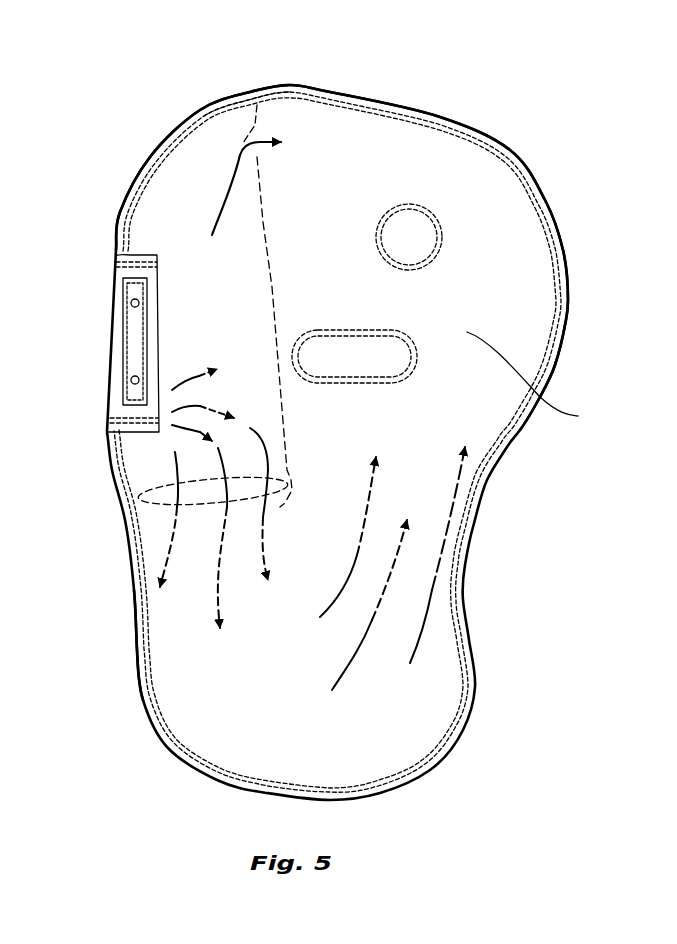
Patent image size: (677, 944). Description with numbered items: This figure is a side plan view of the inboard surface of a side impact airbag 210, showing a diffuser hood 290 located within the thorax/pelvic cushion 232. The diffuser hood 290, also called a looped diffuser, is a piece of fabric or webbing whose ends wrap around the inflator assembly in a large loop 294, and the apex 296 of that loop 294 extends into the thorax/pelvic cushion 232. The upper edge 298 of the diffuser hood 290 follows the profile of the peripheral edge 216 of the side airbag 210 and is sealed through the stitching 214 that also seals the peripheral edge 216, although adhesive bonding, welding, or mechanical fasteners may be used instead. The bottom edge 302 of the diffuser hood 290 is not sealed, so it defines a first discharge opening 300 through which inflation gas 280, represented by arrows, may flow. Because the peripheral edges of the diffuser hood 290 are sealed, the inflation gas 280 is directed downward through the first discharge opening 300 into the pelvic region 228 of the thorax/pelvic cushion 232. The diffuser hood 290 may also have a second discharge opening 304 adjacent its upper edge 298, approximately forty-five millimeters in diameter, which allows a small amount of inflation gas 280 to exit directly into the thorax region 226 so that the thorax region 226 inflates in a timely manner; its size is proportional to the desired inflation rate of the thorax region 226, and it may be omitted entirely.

The side impact airbag 210 is at (597, 202).
The peripheral edge 216 is at (509, 151).
The thorax/pelvic cushion 232 is at (527, 330).
The thorax region 226 is at (541, 381).
The pelvic region 228 is at (203, 713).
The upper edge 298 is at (216, 110).
The stitching 214 is at (162, 157).
The second discharge opening 304 is at (257, 157).
The diffuser hood 290 is at (263, 222).
The apex 296 is at (273, 287).
The loop 294 is at (290, 503).
The bottom edge 302 is at (140, 497).
The first discharge opening 300 is at (258, 505).
The inflation gas 280 is at (272, 138).